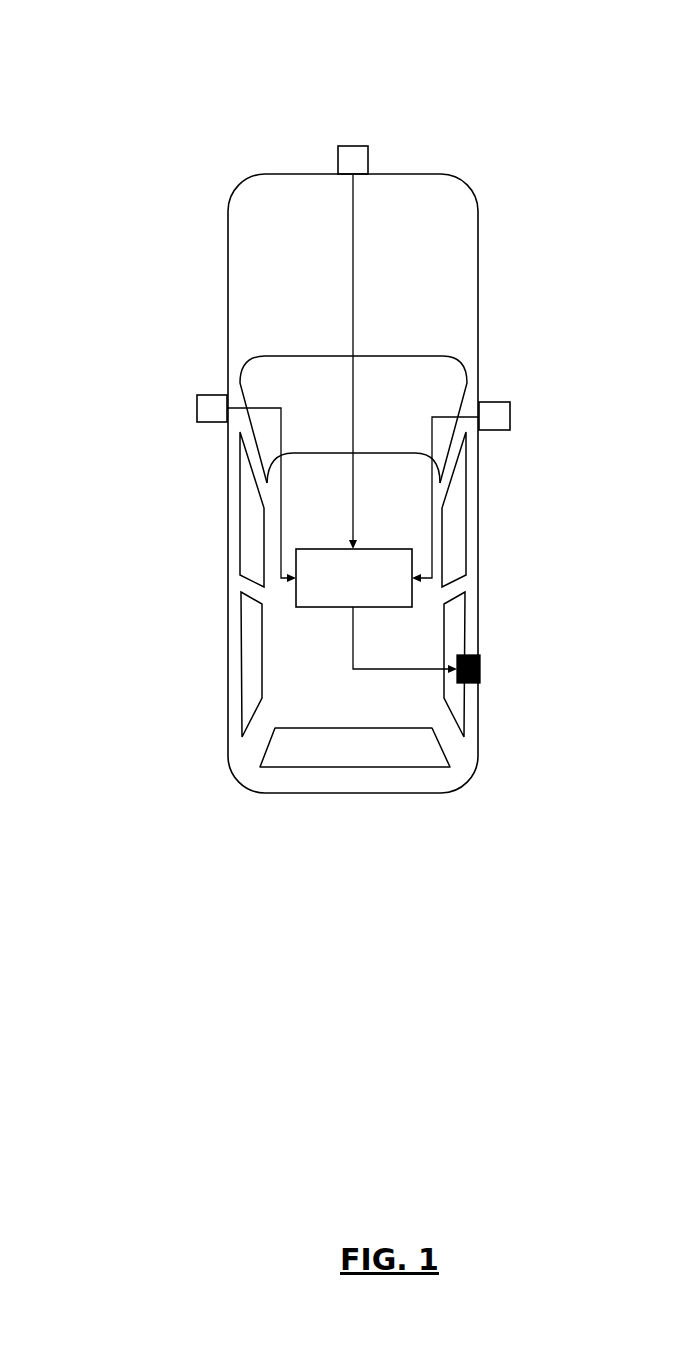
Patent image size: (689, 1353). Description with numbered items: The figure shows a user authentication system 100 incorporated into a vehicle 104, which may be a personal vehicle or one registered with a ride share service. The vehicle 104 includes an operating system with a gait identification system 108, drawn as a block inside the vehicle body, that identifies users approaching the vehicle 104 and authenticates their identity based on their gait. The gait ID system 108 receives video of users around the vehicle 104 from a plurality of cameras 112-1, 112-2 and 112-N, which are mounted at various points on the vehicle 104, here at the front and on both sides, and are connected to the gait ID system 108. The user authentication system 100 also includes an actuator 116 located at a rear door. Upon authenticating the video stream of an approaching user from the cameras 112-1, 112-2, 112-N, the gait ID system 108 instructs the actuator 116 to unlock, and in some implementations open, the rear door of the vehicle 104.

The user authentication system 100 is at (158, 53).
The vehicle 104 is at (228, 302).
The gait identification (ID) system 108 is at (345, 548).
The camera 112-N is at (342, 145).
The camera 112-1 is at (498, 400).
The camera 112-2 is at (200, 393).
The actuator 116 is at (478, 675).